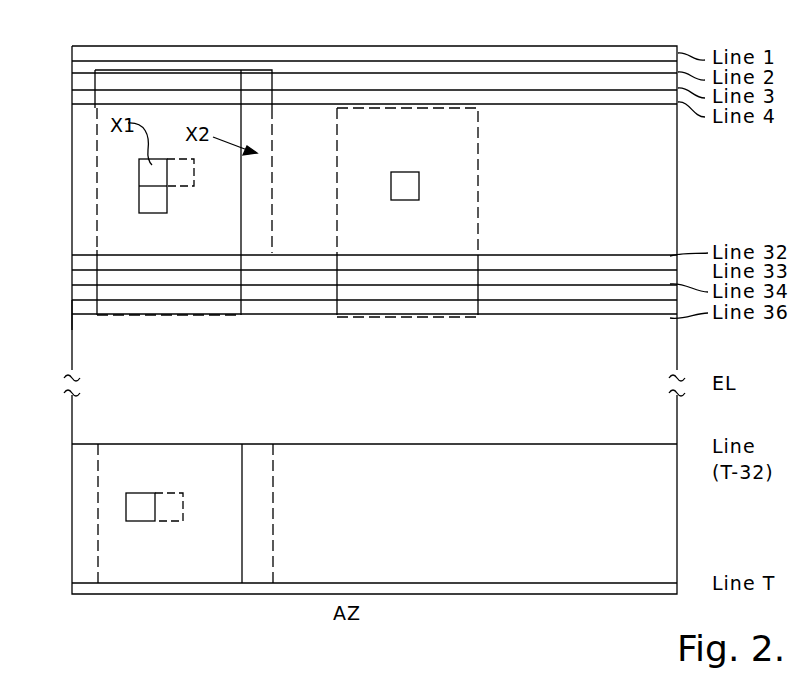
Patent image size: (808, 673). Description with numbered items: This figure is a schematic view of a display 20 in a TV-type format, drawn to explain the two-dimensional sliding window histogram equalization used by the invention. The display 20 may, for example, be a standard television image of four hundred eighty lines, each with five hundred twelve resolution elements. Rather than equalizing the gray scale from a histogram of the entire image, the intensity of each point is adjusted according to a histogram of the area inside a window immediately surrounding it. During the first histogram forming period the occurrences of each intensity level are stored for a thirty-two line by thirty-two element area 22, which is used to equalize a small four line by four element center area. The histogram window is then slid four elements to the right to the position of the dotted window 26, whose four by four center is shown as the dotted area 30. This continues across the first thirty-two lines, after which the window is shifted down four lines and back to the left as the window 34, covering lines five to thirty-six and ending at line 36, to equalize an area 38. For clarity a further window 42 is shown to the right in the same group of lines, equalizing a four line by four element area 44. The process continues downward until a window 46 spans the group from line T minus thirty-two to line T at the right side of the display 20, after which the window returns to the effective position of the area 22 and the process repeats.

The display 20 is at (382, 46).
The window area 22 is at (243, 97).
The dotted window 26 is at (276, 167).
The dotted area 30 is at (185, 188).
The window 34 is at (76, 315).
The line 36 is at (100, 307).
The area 38 is at (143, 215).
The window 42 is at (478, 188).
The area 44 is at (400, 172).
The window 46 is at (245, 502).